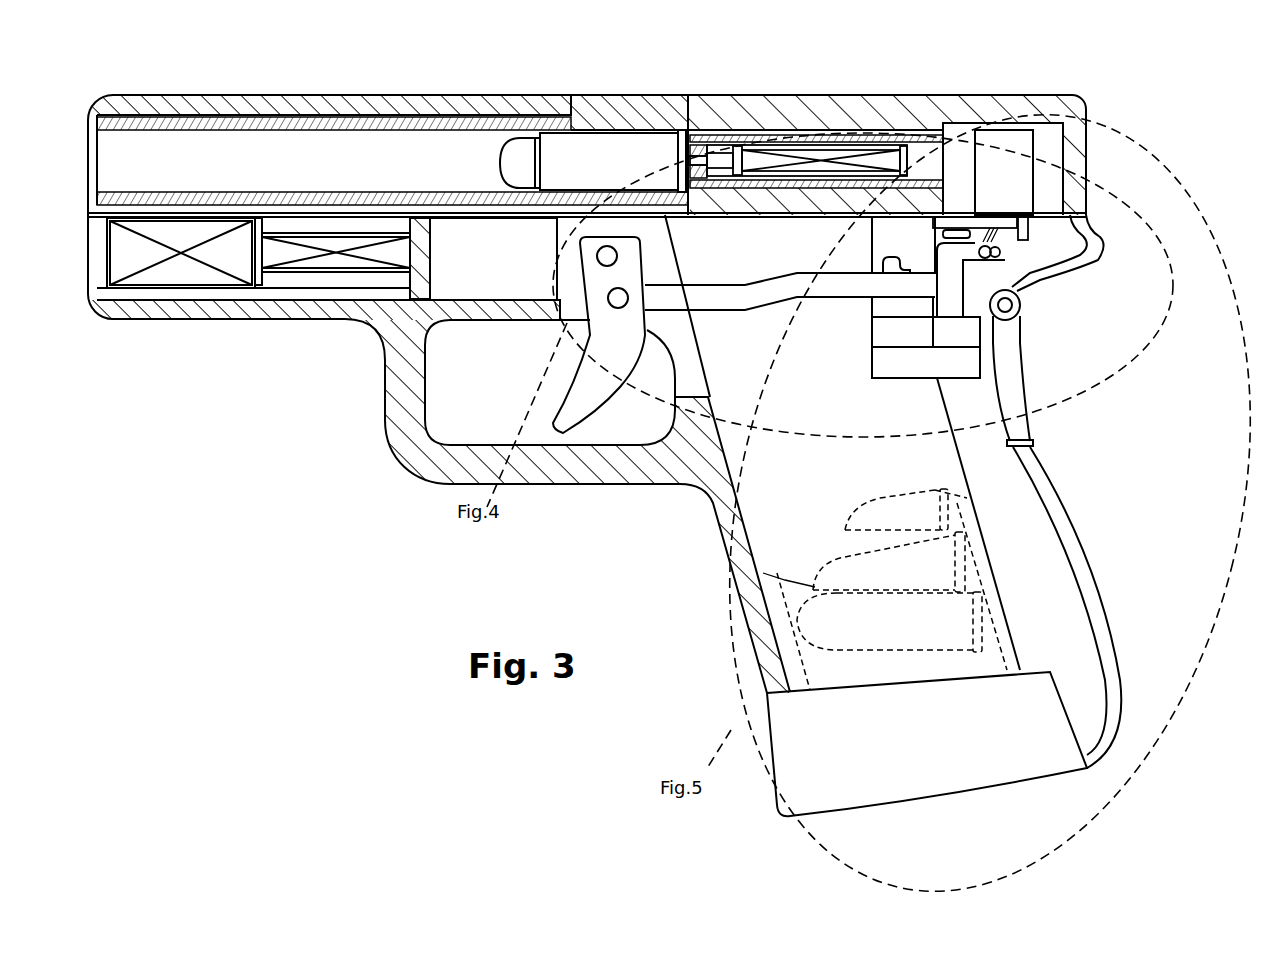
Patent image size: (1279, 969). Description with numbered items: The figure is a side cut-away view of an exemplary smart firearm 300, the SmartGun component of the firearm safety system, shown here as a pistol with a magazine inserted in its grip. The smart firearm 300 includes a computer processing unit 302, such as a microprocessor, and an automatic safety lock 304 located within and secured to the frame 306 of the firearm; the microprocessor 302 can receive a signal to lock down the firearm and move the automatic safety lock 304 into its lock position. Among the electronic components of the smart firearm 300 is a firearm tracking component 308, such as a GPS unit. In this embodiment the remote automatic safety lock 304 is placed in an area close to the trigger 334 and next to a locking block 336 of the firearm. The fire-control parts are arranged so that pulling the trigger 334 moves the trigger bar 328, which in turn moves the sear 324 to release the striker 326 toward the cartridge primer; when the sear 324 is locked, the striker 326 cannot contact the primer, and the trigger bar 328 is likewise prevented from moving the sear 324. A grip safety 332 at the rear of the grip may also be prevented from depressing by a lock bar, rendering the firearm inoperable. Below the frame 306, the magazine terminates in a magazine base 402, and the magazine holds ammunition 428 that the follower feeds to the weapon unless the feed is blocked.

The smart firearm 300 is at (1060, 73).
The computer processing unit 302 is at (890, 235).
The automatic safety lock 304 is at (990, 254).
The frame 306 is at (693, 443).
The firearm tracking component 308 is at (883, 305).
The sear 324 is at (950, 307).
The striker 326 is at (880, 160).
The trigger bar 328 is at (718, 305).
The grip safety 332 is at (1010, 385).
The trigger 334 is at (583, 413).
The locking block 336 is at (490, 267).
The magazine base 402 is at (938, 753).
The ammunition 428 is at (597, 172).